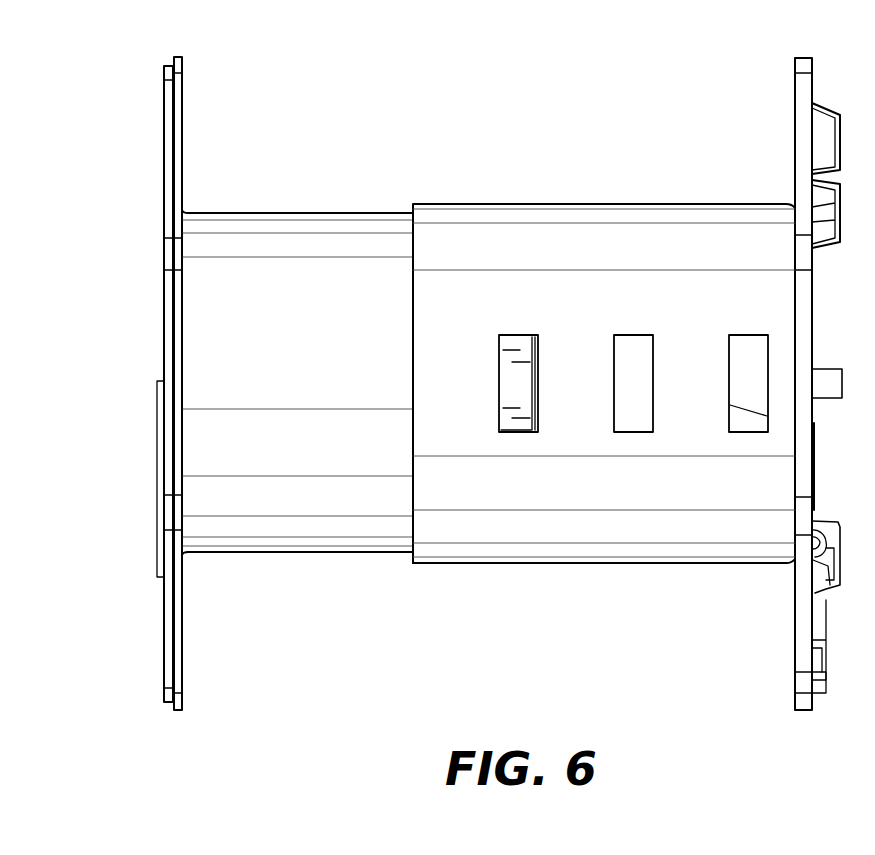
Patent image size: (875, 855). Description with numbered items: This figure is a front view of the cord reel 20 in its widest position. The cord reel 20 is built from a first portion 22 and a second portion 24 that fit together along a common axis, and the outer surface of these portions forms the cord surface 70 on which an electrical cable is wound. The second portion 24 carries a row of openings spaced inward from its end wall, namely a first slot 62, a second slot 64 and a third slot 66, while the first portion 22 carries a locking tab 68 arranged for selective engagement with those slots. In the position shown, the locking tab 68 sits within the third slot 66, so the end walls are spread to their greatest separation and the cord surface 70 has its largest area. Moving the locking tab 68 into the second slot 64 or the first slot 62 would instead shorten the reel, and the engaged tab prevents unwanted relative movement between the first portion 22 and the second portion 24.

The cord reel 20 is at (510, 86).
The first portion 22 is at (265, 211).
The second portion 24 is at (658, 202).
The first slot 62 is at (758, 334).
The second slot 64 is at (643, 334).
The third slot 66 is at (522, 334).
The locking tab 68 is at (515, 402).
The cord surface 70 is at (292, 553).